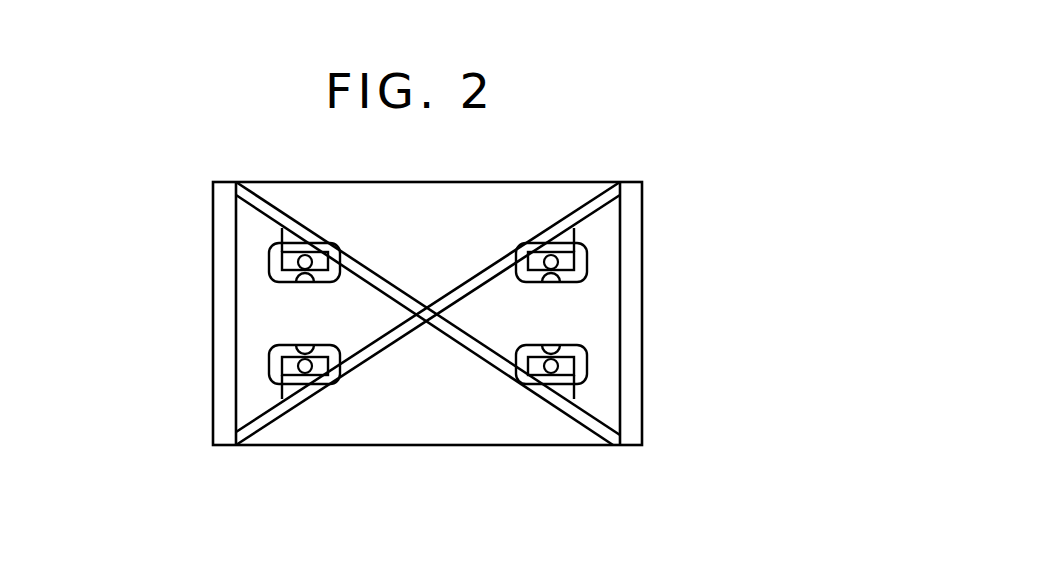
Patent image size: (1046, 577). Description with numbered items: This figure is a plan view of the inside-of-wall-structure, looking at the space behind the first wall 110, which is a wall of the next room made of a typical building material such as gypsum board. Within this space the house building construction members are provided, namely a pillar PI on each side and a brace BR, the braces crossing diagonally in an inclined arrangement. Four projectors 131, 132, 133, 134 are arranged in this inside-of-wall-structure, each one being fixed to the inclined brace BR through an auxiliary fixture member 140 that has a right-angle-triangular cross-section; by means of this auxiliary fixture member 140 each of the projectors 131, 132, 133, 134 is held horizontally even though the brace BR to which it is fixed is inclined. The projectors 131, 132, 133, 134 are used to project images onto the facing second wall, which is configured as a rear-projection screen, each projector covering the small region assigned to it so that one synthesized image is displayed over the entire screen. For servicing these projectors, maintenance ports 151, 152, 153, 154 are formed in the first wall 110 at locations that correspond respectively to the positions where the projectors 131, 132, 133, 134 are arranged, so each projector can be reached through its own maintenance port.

The first wall 110 is at (488, 190).
The pillar PI is at (220, 203).
The brace BR is at (258, 420).
The projector 131 is at (285, 262).
The projector 132 is at (282, 366).
The projector 133 is at (575, 259).
The projector 134 is at (574, 365).
The auxiliary fixture member 140 is at (293, 245).
The maintenance port 151 is at (292, 283).
The maintenance port 152 is at (272, 352).
The maintenance port 153 is at (563, 281).
The maintenance port 154 is at (573, 344).